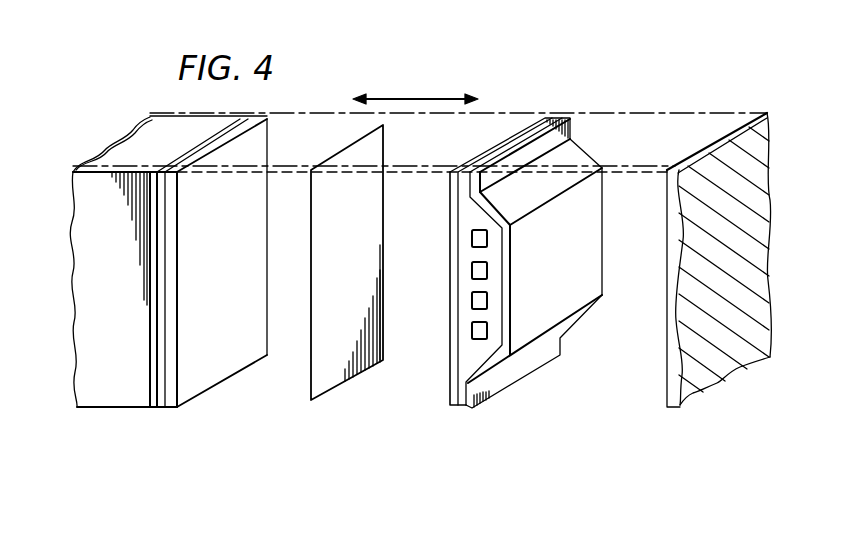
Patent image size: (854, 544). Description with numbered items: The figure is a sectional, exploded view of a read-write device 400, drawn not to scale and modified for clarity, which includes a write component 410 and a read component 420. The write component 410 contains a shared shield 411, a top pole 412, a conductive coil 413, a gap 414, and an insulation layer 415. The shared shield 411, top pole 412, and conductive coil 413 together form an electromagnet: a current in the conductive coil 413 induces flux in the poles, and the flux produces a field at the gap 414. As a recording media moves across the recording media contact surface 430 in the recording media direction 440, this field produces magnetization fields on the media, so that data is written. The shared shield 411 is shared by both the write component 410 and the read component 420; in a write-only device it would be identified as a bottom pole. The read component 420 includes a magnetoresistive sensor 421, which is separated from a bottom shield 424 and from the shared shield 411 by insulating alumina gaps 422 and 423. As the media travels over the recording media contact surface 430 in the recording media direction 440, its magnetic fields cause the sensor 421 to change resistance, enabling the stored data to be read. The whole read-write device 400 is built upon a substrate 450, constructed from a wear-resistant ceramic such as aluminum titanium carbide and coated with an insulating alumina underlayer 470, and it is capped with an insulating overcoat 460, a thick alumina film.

The read-write device 400 is at (623, 80).
The write component 410 is at (605, 461).
The shared shield 411 is at (458, 406).
The top pole 412 is at (466, 406).
The conductive coil 413 is at (480, 228).
The gap 414 is at (553, 118).
The insulation layer 415 is at (468, 345).
The read component 420 is at (155, 461).
The sensor 421 is at (381, 160).
The insulating alumina gap 422 is at (258, 388).
The insulating alumina gap 423 is at (383, 390).
The bottom shield 424 is at (174, 407).
The recording media contact surface 430 is at (715, 118).
The recording media direction 440 is at (416, 97).
The substrate 450 is at (102, 404).
The insulating overcoat 460 is at (595, 372).
The insulating alumina underlayer 470 is at (157, 407).